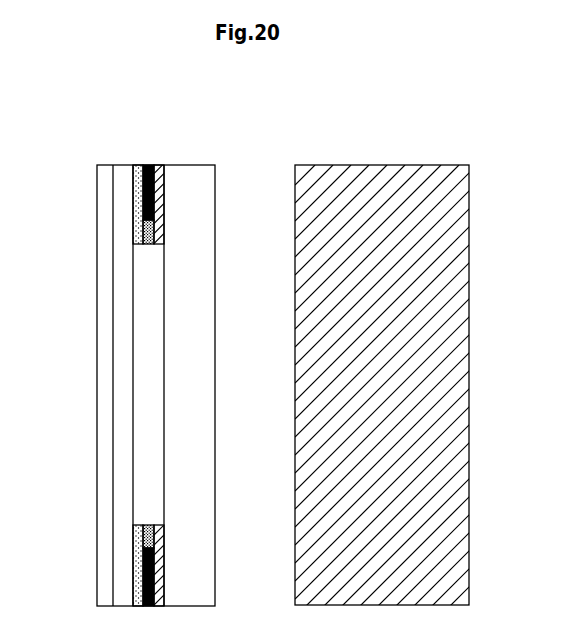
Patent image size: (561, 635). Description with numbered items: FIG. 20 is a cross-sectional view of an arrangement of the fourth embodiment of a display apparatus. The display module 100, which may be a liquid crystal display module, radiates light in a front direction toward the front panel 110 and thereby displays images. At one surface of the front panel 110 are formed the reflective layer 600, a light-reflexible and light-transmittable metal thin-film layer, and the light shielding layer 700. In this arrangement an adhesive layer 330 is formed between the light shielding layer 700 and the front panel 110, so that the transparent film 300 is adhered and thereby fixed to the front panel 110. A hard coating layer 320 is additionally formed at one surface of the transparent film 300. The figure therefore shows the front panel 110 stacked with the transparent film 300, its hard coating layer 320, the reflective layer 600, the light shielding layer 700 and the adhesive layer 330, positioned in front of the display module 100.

The display module 100 is at (383, 176).
The front panel 110 is at (208, 315).
The transparent film 300 is at (118, 416).
The hard coating layer 320 is at (105, 348).
The adhesive layer 330 is at (161, 181).
The reflective layer 600 is at (137, 165).
The light shielding layer 700 is at (148, 165).